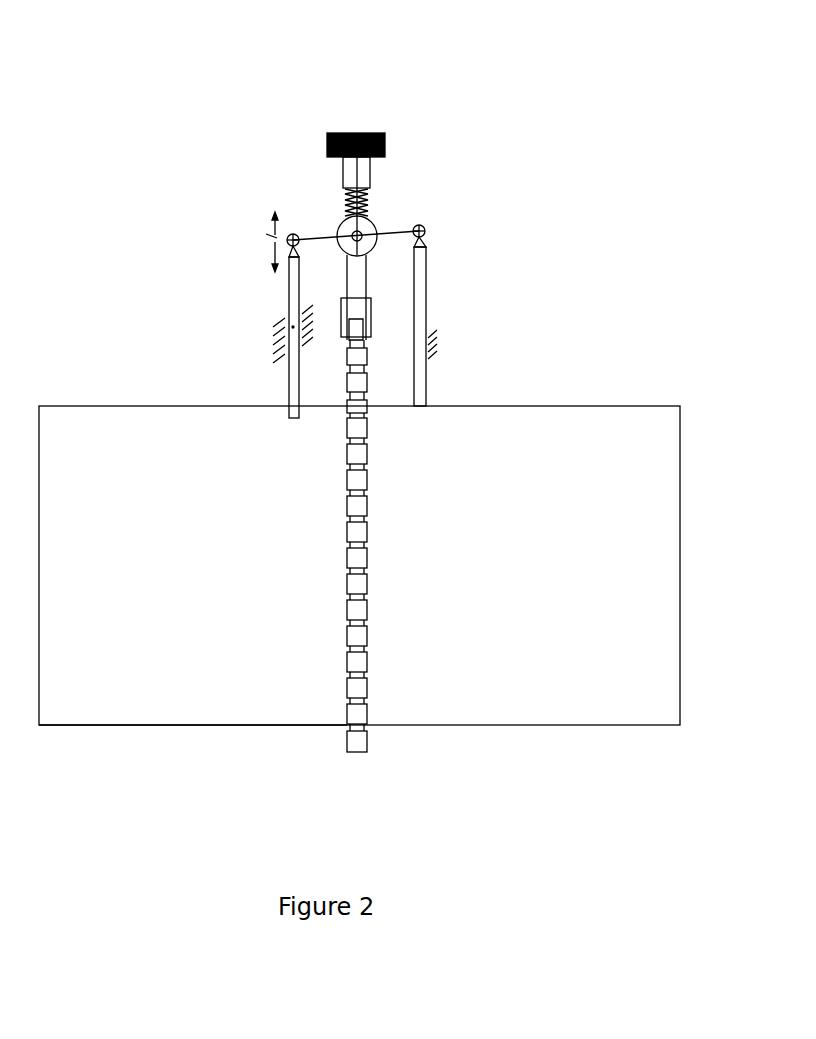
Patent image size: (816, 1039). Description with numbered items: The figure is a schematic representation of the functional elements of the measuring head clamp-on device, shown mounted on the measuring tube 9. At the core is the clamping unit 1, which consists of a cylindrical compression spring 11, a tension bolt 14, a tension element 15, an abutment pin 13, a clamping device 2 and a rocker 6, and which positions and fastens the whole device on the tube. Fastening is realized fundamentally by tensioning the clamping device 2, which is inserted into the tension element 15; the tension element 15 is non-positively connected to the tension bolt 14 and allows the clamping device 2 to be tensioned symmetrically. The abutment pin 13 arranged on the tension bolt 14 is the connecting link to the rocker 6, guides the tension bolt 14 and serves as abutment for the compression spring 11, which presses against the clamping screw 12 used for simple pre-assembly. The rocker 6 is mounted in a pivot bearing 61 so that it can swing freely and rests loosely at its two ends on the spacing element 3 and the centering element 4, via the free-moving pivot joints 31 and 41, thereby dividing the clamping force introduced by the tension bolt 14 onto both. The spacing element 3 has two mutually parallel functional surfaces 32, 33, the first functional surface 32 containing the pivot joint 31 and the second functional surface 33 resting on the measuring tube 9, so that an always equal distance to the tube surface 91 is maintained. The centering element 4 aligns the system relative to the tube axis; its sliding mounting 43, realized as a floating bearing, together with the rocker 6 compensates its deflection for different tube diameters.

The clamping unit 1 is at (330, 78).
The clamping device 2 is at (369, 483).
The spacing element 3 is at (428, 373).
The centering element 4 is at (288, 292).
The rocker 6 is at (399, 231).
The measuring tube 9 is at (550, 681).
The compression spring 11 is at (372, 192).
The clamping screw 12 is at (376, 130).
The abutment pin 13 is at (378, 217).
The tension bolt 14 is at (375, 270).
The tension element 15 is at (372, 317).
The pivot joint 31 is at (427, 224).
The first functional surface 32 is at (429, 236).
The second functional surface 33 is at (426, 403).
The pivot joint 41 is at (291, 233).
The sliding mounting 43 is at (273, 338).
The pivot bearing 61 is at (351, 230).
The tube surface 91 is at (151, 731).